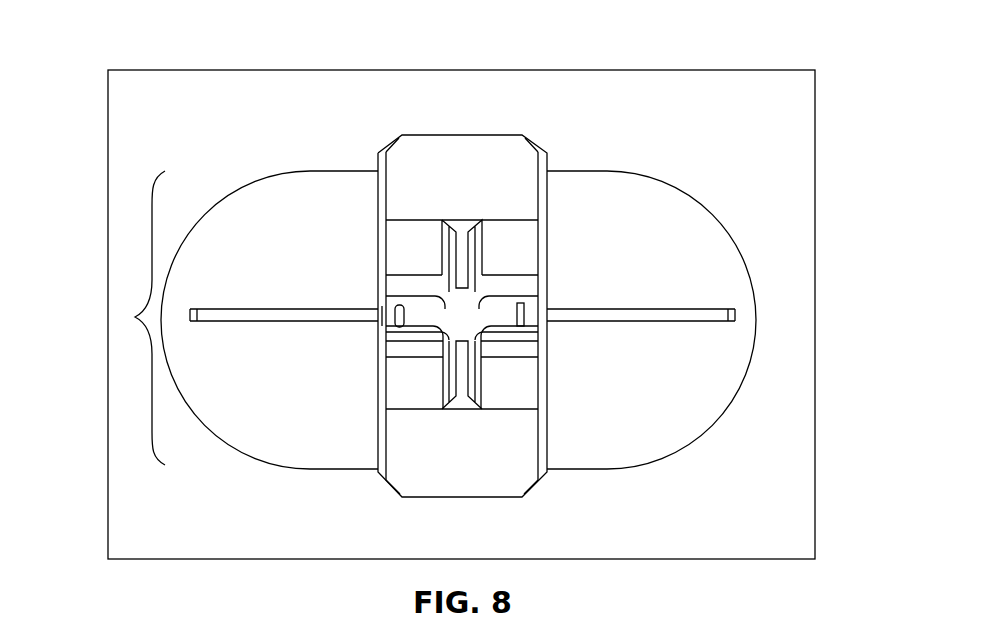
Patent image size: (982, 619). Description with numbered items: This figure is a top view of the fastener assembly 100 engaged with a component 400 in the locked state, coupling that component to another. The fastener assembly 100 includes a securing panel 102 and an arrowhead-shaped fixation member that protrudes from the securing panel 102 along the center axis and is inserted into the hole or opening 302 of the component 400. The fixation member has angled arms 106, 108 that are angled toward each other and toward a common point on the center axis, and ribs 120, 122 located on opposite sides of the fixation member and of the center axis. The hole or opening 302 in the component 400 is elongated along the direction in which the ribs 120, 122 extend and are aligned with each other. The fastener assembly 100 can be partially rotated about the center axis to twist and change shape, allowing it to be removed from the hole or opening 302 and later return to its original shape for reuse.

The component 400 is at (689, 80).
The fastener assembly 100 is at (299, 139).
The securing panel 102 is at (730, 270).
The angled arm 106 is at (517, 438).
The angled arm 108 is at (503, 150).
The rib 120 is at (260, 308).
The rib 122 is at (582, 316).
The hole or opening 302 is at (135, 317).